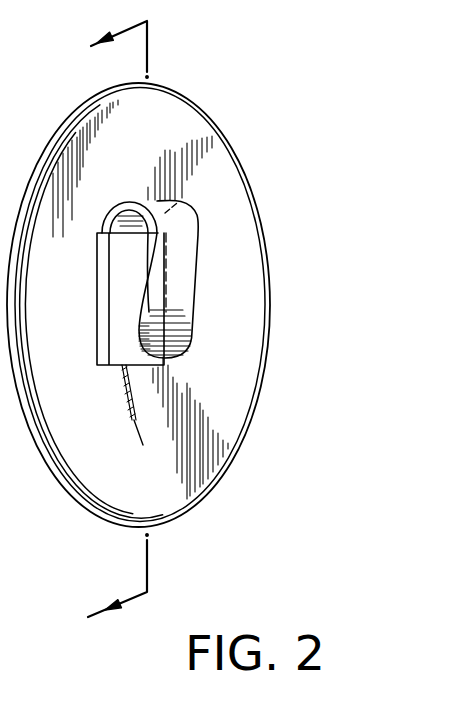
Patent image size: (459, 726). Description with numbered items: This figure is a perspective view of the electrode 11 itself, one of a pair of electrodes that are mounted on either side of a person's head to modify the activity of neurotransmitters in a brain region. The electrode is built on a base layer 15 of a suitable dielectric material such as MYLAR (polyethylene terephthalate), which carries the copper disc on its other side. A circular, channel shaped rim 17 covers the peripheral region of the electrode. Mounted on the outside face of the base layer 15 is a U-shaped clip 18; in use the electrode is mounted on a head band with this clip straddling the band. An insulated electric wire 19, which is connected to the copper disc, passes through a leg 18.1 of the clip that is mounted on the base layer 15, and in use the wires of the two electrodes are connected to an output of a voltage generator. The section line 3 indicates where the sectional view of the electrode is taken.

The section line 3- 3 is at (100, 332).
The electrode 11 is at (191, 295).
The base layer 15 is at (138, 295).
The rim 17 is at (224, 82).
The U-shaped clip 18 is at (187, 242).
The leg 18.1 is at (122, 309).
The insulated electric wire 19 is at (125, 403).